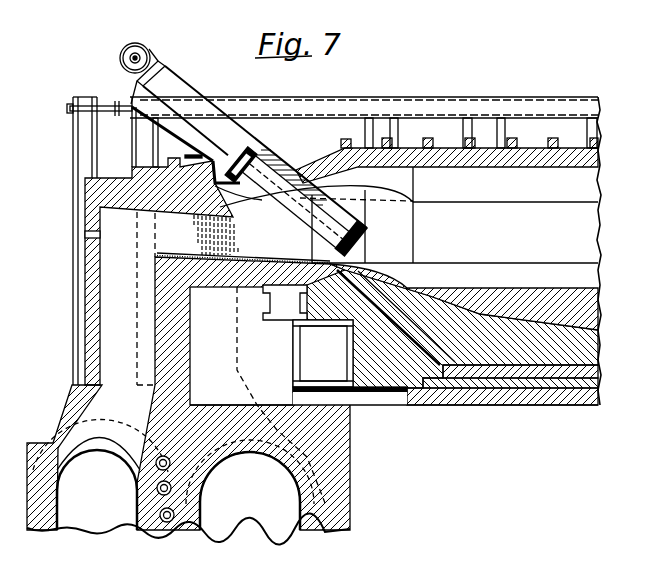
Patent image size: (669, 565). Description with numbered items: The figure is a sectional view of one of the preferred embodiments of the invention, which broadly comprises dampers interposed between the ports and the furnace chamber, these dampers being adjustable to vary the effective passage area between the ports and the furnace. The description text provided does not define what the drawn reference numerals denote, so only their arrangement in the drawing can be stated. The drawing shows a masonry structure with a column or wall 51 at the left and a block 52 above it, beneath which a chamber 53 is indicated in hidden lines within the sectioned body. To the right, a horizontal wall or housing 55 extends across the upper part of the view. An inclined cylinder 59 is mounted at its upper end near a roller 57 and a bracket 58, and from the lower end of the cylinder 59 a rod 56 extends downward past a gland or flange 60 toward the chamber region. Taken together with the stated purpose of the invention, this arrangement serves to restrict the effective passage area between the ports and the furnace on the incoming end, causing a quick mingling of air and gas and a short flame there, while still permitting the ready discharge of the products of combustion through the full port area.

The frame column 51 is at (115, 317).
The support block 52 is at (175, 240).
The chamber 53 is at (230, 352).
The housing wall 55 is at (365, 218).
The piston rod 56 is at (295, 217).
The roller 57 is at (232, 43).
The bracket 58 is at (152, 120).
The cylinder 59 is at (240, 151).
The gland 60 is at (246, 193).